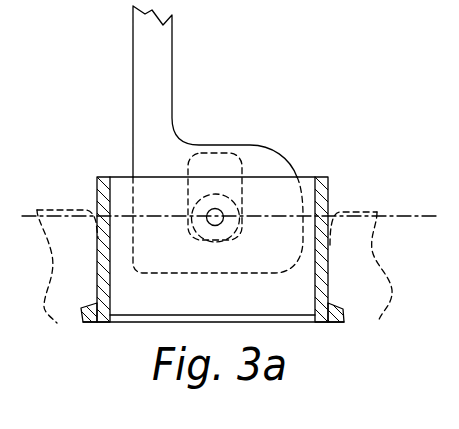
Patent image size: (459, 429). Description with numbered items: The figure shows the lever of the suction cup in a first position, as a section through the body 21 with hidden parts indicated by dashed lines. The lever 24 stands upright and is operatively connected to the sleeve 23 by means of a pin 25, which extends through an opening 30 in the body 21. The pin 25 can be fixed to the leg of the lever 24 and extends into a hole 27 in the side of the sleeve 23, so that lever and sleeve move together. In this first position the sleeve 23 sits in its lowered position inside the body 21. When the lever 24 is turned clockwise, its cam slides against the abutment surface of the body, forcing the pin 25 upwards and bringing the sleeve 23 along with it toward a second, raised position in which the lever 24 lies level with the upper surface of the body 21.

The body 21 is at (357, 261).
The sleeve 23 is at (327, 200).
The lever 24 is at (162, 70).
The pin 25 is at (222, 223).
The hole 27 is at (207, 217).
The opening 30 is at (214, 162).